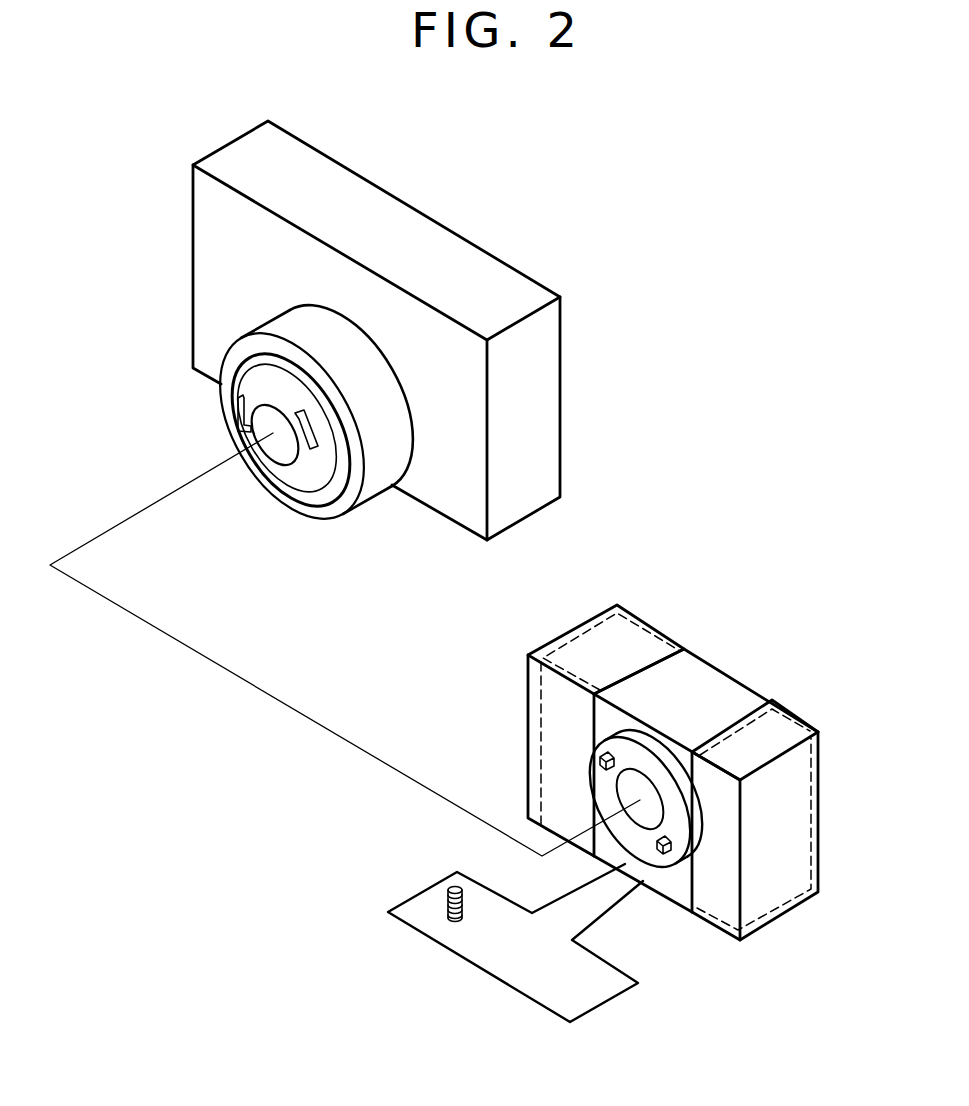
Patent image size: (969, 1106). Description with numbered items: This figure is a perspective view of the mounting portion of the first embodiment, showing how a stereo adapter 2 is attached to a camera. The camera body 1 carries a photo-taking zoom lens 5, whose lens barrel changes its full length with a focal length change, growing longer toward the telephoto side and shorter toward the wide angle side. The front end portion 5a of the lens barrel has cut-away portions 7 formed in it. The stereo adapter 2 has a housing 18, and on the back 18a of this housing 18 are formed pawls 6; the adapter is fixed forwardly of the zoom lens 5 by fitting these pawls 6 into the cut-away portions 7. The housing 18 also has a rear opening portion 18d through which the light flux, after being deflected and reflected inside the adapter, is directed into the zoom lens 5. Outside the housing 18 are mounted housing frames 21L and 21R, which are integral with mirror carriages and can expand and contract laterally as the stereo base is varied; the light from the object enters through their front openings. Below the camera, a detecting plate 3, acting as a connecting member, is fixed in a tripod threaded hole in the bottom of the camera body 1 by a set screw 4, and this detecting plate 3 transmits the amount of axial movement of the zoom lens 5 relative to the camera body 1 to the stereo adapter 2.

The camera body 1 is at (551, 378).
The stereo adapter 2 is at (658, 823).
The detecting plate 3 is at (618, 986).
The set screw 4 is at (446, 892).
The zoom lens 5 is at (332, 462).
The front end portion of the lens barrel 5a is at (302, 482).
The pawls 6 is at (664, 838).
The cut-away portions 7 is at (312, 450).
The housing 18 is at (722, 682).
The back of the housing 18a is at (677, 882).
The rear opening portion 18d is at (625, 788).
The left housing frame 21L is at (657, 627).
The right housing frame 21R is at (790, 708).